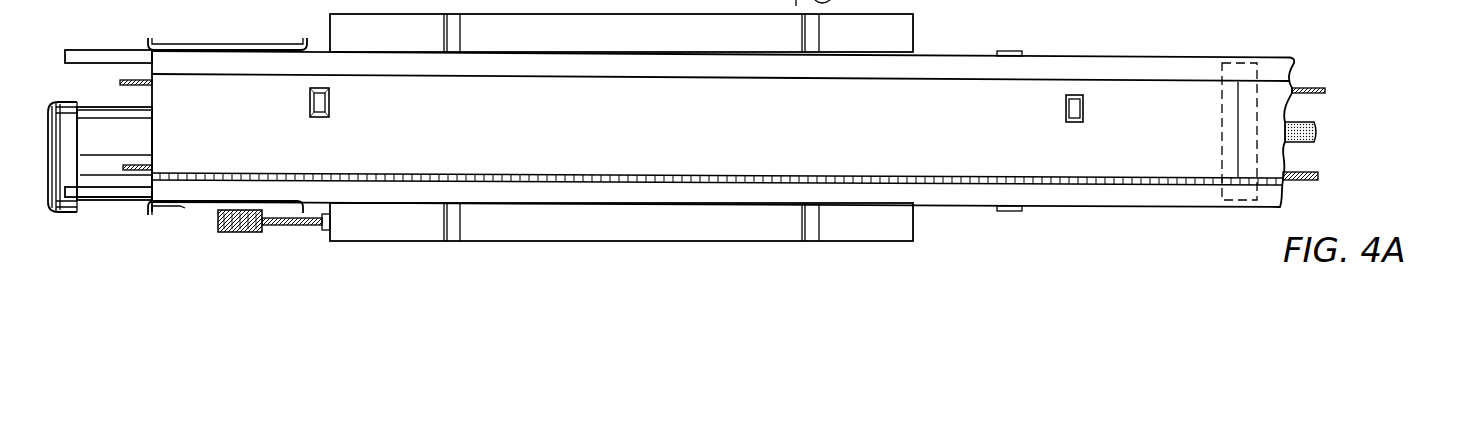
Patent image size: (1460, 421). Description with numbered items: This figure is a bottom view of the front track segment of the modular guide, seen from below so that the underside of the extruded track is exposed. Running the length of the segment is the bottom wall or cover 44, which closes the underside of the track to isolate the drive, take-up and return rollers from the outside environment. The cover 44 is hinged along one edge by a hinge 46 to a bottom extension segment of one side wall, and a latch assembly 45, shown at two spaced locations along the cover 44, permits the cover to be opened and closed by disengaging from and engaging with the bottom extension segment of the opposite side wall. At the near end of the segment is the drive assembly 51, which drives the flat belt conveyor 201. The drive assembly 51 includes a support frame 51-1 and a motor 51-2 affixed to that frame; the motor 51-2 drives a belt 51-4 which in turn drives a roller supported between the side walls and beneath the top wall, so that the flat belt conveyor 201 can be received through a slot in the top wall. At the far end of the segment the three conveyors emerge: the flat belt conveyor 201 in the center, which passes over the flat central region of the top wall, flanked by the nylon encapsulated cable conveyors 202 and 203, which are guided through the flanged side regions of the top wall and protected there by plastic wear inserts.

The bottom wall or cover 44 is at (953, 95).
The latch assembly 45 is at (310, 104).
The hinge 46 is at (926, 178).
The drive assembly 51 is at (120, 218).
The support frame 51-1 is at (208, 46).
The motor 51-2 is at (108, 108).
The belt 51-4 is at (287, 222).
The flat belt conveyor 201 is at (1316, 128).
The nylon encapsulated cable conveyor 202 is at (1318, 180).
The nylon encapsulated cable conveyor 203 is at (1310, 88).